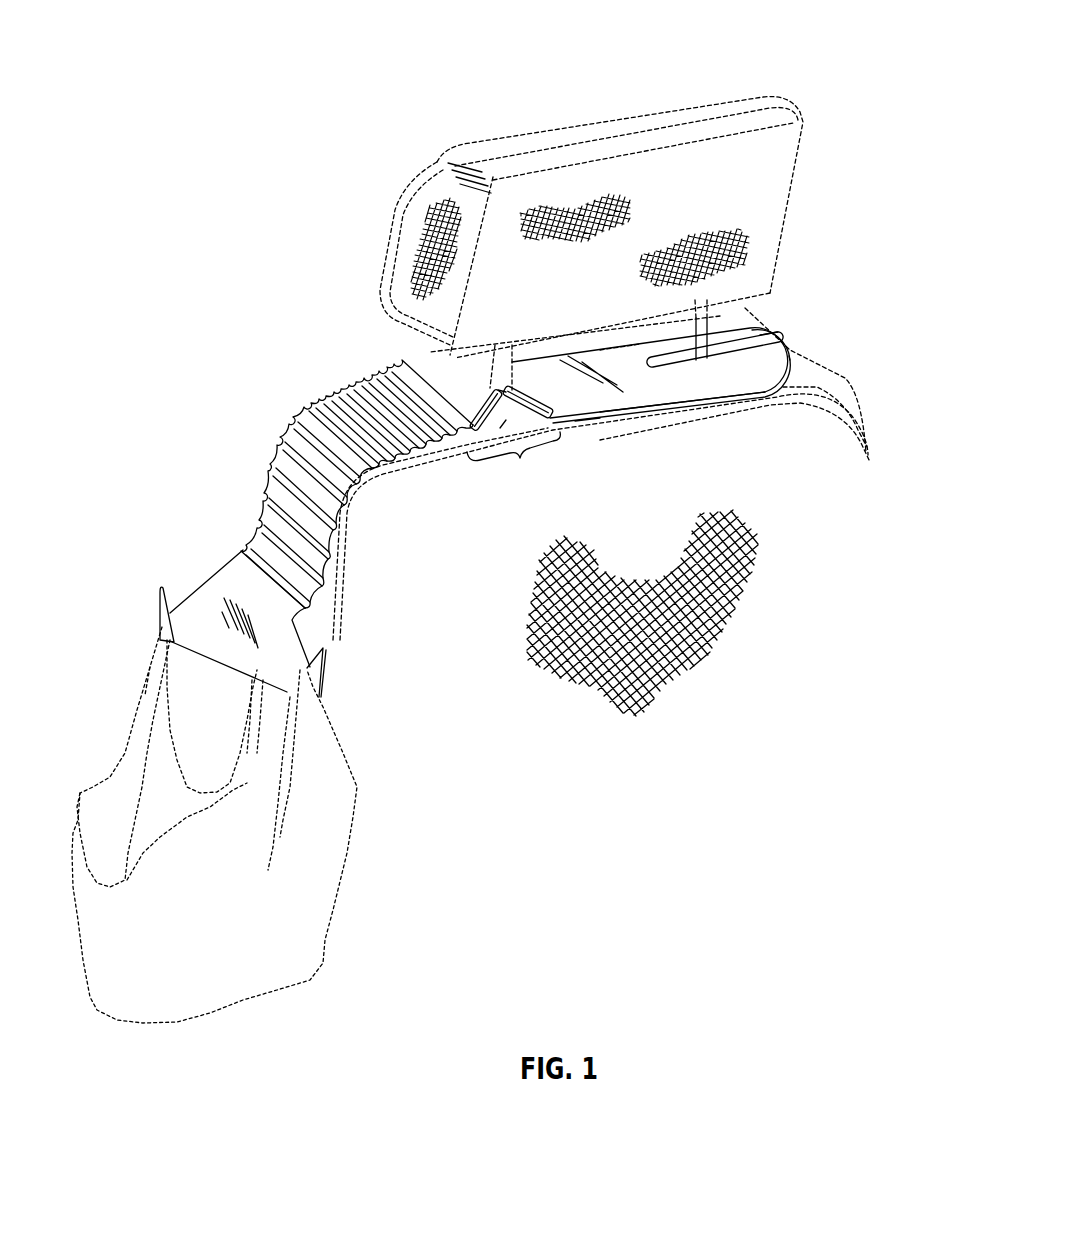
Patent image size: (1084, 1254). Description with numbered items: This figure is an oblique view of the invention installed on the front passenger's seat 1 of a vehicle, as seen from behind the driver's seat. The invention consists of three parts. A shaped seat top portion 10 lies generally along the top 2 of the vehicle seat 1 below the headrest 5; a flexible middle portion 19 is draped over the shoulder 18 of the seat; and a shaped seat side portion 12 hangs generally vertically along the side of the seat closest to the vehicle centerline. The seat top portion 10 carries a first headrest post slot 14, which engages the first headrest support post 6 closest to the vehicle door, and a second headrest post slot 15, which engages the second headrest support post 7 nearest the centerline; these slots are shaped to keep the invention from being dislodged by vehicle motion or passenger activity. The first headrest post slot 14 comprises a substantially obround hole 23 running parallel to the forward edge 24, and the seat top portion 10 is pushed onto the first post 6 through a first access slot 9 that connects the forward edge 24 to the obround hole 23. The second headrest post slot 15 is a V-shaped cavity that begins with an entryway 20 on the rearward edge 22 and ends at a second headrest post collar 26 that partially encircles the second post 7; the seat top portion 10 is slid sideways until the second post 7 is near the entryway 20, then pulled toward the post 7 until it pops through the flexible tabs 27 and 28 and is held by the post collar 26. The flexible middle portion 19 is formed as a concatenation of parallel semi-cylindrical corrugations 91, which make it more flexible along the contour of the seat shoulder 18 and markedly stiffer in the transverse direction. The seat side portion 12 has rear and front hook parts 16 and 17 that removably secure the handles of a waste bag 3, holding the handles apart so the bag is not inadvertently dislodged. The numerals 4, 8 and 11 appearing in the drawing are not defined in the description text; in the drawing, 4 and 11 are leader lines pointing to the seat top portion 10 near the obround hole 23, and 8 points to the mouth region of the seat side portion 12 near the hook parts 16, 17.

The front passenger's seat 1 is at (638, 525).
The top of vehicle seat 2 is at (512, 400).
The waste bag 3 is at (235, 843).
The plate lower edge 4 is at (693, 413).
The headrest 5 is at (583, 296).
The first headrest support post 6 is at (703, 327).
The second headrest support post 7 is at (505, 385).
The mouth rim 8 is at (283, 703).
The first access slot 9 is at (147, 690).
The seat top portion 10 is at (688, 390).
The slot 11 is at (712, 335).
The seat side portion 12 is at (263, 671).
The first headrest post slot 14 is at (778, 351).
The second headrest post slot 15 is at (513, 456).
The rear hook part 16 is at (317, 680).
The front hook part 17 is at (170, 610).
The shoulder of vehicle seat 18 is at (385, 488).
The flexible middle portion 19 is at (273, 446).
The entryway 20 is at (502, 425).
The rearward edge 22 is at (585, 420).
The obround hole 23 is at (745, 350).
The forward edge 24 is at (622, 345).
The second headrest post collar 26 is at (493, 392).
The flexible tab 27 is at (472, 408).
The flexible tab 28 is at (528, 398).
The corrugations 91 is at (336, 394).